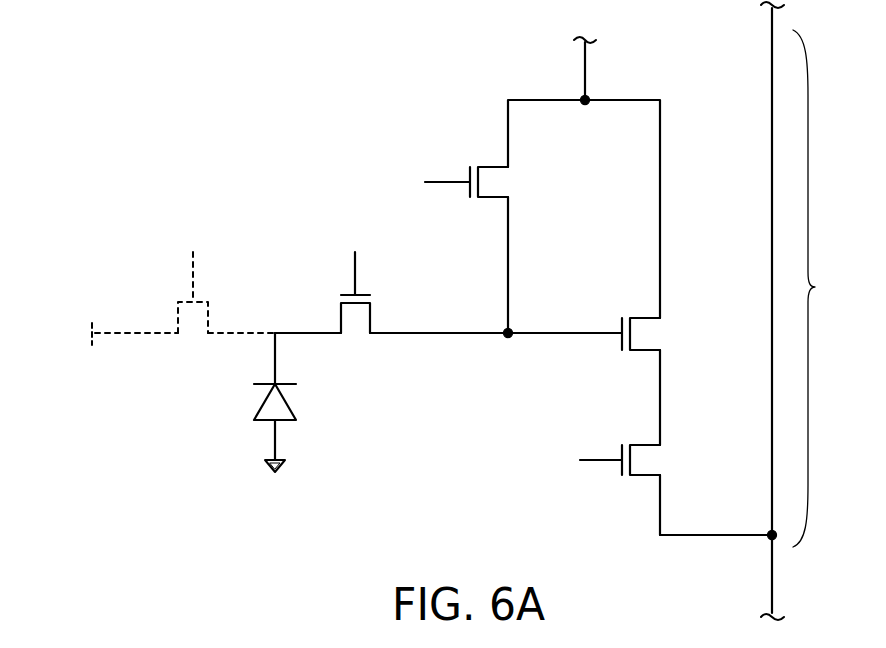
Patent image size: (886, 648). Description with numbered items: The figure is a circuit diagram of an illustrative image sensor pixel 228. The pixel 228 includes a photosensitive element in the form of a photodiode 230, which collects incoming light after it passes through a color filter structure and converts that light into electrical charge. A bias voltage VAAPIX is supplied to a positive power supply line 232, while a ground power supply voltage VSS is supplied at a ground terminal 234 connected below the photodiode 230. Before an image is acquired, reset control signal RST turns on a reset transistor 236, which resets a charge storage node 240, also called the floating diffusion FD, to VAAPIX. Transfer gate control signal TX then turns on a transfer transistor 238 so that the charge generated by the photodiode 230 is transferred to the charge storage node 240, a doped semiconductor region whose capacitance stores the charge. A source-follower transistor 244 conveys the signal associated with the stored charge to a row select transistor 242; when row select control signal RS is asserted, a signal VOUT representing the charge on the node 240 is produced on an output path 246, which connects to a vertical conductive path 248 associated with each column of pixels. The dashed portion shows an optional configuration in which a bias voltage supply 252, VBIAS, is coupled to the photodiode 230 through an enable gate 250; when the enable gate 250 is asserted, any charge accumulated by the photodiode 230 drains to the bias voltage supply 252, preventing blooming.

The pixel 228 is at (823, 288).
The photodiode 230 is at (268, 404).
The positive power supply line 232 is at (583, 70).
The ground terminal 234 is at (270, 467).
The reset transistor 236 is at (493, 170).
The transfer transistor 238 is at (356, 328).
The charge storage node 240 is at (506, 331).
The row select transistor 242 is at (645, 470).
The source-follower transistor 244 is at (645, 322).
The output path 246 is at (705, 537).
The vertical conductive path 248 is at (770, 223).
The enable gate 250 is at (194, 328).
The bias voltage supply 252 is at (115, 332).